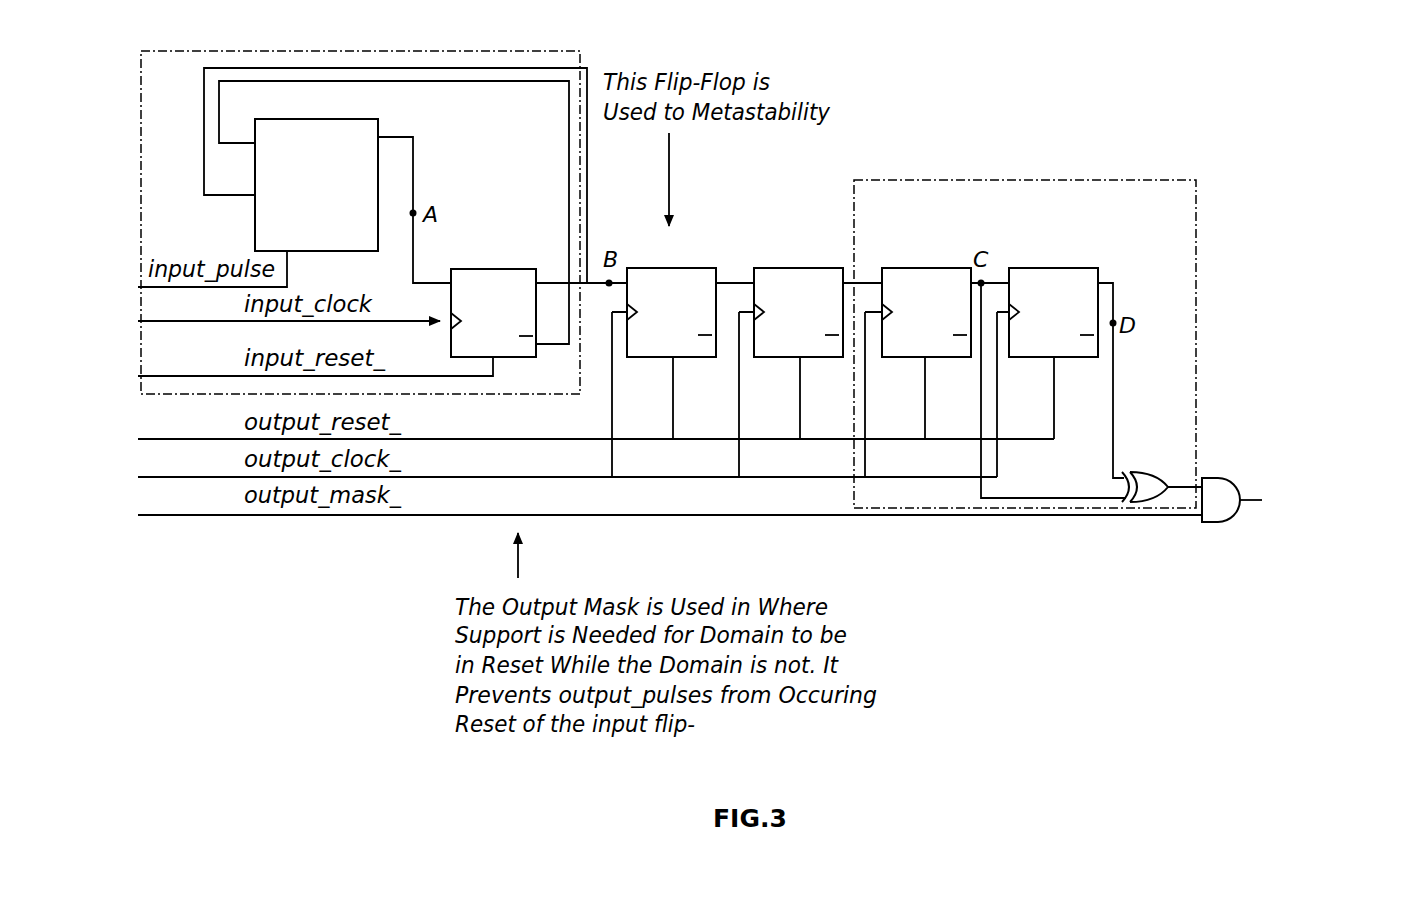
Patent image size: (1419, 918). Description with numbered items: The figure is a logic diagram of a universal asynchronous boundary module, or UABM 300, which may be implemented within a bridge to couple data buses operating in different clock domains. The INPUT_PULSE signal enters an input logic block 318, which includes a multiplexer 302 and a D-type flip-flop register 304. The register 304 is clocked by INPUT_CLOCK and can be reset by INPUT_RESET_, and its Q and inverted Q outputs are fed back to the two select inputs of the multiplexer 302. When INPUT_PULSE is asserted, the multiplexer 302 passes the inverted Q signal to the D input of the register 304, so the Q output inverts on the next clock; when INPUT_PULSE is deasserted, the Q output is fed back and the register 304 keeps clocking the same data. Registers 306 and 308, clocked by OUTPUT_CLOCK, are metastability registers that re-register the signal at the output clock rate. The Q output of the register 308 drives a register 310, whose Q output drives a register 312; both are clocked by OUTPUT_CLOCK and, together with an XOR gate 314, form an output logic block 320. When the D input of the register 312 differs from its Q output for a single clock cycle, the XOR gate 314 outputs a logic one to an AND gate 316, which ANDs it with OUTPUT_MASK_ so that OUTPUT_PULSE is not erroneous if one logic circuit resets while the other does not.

The universal asynchronous boundary module 300 is at (978, 62).
The multiplexer 302 is at (382, 127).
The D-type flip-flop register 304 is at (507, 359).
The metastability register 306 is at (650, 265).
The metastability register 308 is at (777, 265).
The register 310 is at (905, 265).
The register 312 is at (1032, 265).
The XOR gate 314 is at (1133, 472).
The AND gate 316 is at (1215, 478).
The input logic block 318 is at (533, 55).
The output logic block 320 is at (1148, 180).